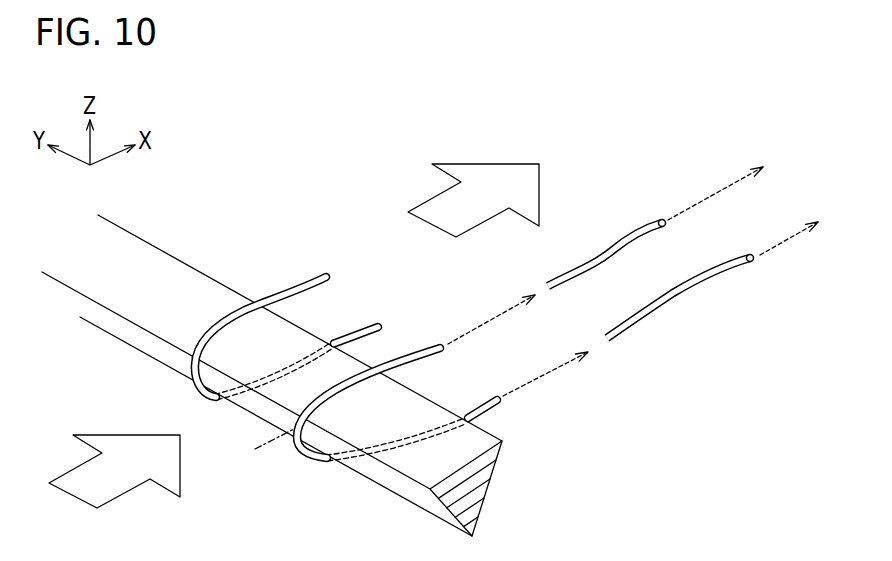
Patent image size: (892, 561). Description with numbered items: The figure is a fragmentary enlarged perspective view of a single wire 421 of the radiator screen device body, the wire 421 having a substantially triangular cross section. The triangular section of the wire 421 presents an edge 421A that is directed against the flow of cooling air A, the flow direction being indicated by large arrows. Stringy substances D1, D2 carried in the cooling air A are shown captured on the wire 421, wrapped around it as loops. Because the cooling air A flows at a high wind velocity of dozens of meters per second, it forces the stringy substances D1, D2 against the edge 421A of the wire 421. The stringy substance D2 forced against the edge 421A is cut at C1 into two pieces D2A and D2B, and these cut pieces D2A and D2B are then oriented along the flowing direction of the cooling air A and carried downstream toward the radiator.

The wire 421 is at (272, 371).
The edge 421A is at (152, 338).
The stringy substance D1 is at (292, 293).
The stringy substance D2 is at (419, 349).
The cut piece D2A is at (618, 242).
The cut piece D2B is at (692, 293).
The cut location C1 is at (263, 447).
The cooling air A is at (438, 207).